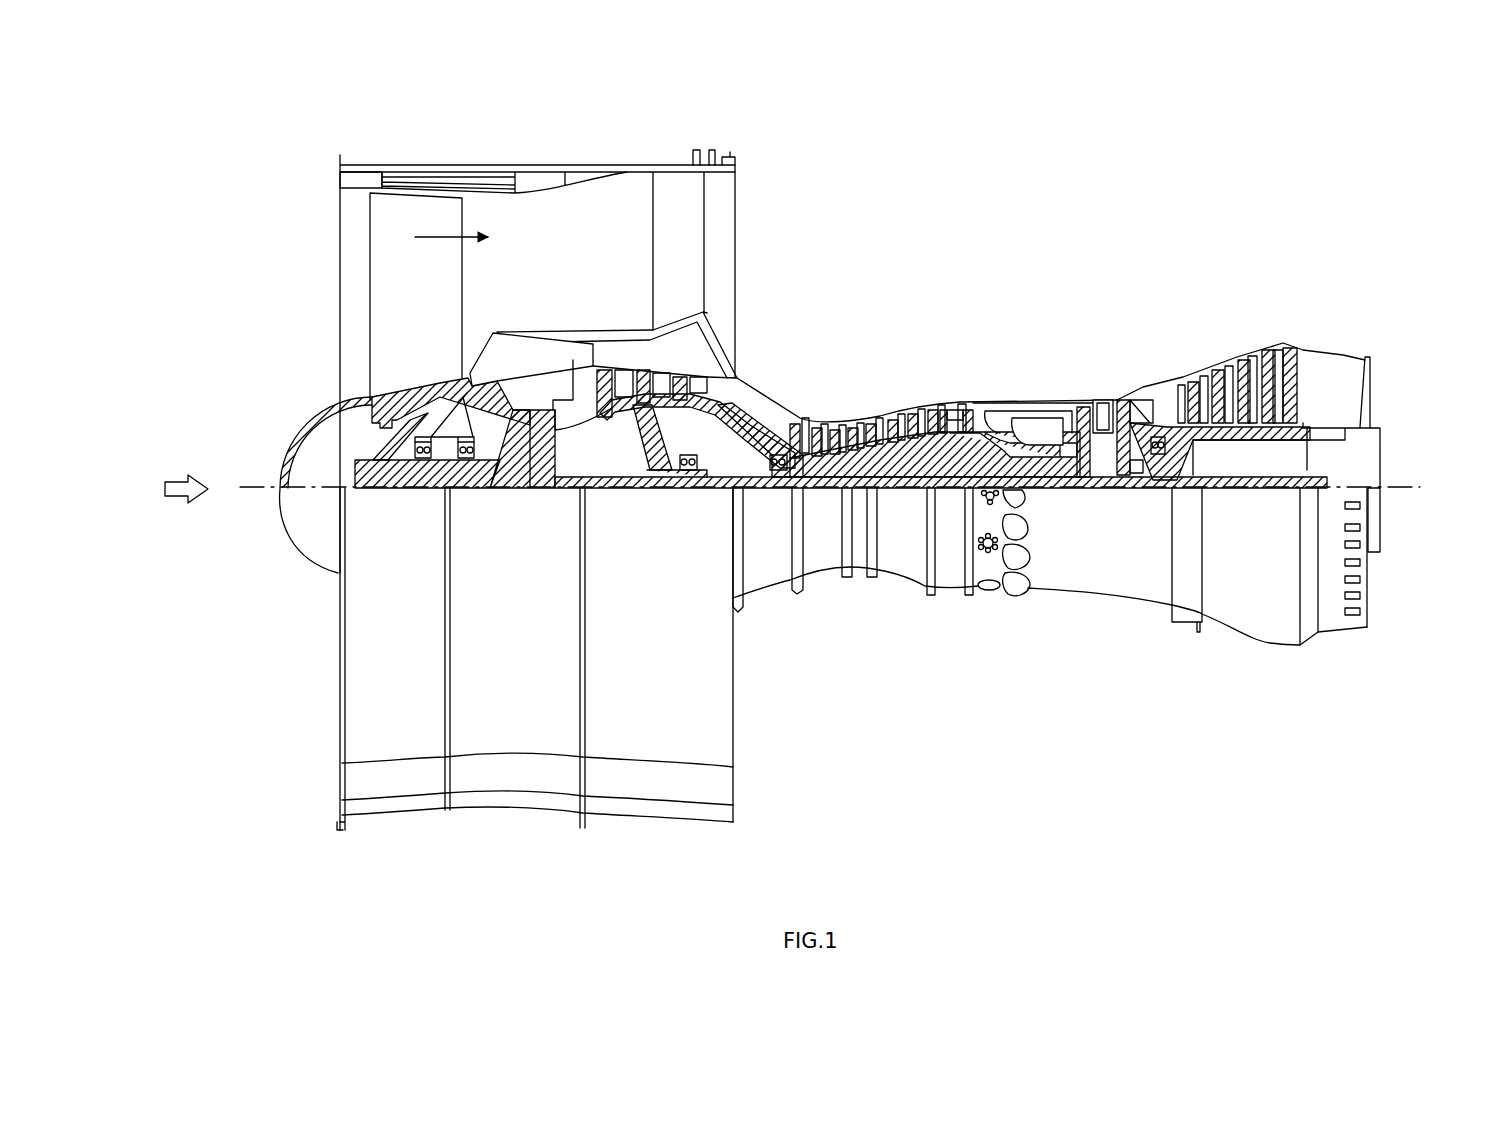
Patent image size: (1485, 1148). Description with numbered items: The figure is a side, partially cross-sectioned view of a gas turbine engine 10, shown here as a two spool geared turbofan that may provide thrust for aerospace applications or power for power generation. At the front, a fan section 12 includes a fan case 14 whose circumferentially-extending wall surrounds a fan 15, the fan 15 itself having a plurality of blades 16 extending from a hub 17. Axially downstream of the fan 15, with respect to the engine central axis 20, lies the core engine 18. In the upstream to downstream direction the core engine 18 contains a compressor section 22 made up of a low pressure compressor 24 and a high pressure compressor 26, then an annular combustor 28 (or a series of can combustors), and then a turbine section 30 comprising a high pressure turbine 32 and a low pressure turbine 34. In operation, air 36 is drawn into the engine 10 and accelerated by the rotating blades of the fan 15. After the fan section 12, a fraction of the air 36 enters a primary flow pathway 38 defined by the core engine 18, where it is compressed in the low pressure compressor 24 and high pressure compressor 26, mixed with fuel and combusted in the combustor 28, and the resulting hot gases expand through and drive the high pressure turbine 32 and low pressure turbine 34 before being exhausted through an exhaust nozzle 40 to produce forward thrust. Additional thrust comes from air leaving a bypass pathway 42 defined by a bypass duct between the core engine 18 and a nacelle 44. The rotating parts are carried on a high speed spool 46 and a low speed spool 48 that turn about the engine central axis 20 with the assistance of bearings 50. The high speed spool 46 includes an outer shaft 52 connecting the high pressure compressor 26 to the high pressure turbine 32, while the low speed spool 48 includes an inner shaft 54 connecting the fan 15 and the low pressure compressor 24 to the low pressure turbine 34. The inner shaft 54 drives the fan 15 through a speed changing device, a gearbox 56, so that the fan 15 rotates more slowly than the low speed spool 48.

The gas turbine engine 10 is at (1078, 203).
The fan section 12 is at (536, 140).
The fan case 14 is at (360, 182).
The fan 15 is at (445, 220).
The blades 16 is at (445, 310).
The hub 17 is at (310, 457).
The core engine 18 is at (893, 317).
The engine central axis 20 is at (1405, 489).
The compressor section 22 is at (780, 390).
The low pressure compressor 24 is at (647, 390).
The high pressure compressor 26 is at (862, 415).
The combustor 28 is at (1028, 423).
The turbine section 30 is at (1200, 318).
The high pressure turbine 32 is at (1103, 398).
The low pressure turbine 34 is at (1263, 360).
The air 36 is at (176, 478).
The primary flow pathway 38 is at (520, 367).
The exhaust nozzle 40 is at (1345, 355).
The bypass pathway 42 is at (430, 238).
The nacelle 44 is at (620, 165).
The high speed spool 46 is at (935, 447).
The low speed spool 48 is at (895, 493).
The bearings 50 is at (688, 470).
The outer shaft 52 is at (948, 490).
The inner shaft 54 is at (758, 490).
The gearbox 56 is at (545, 455).